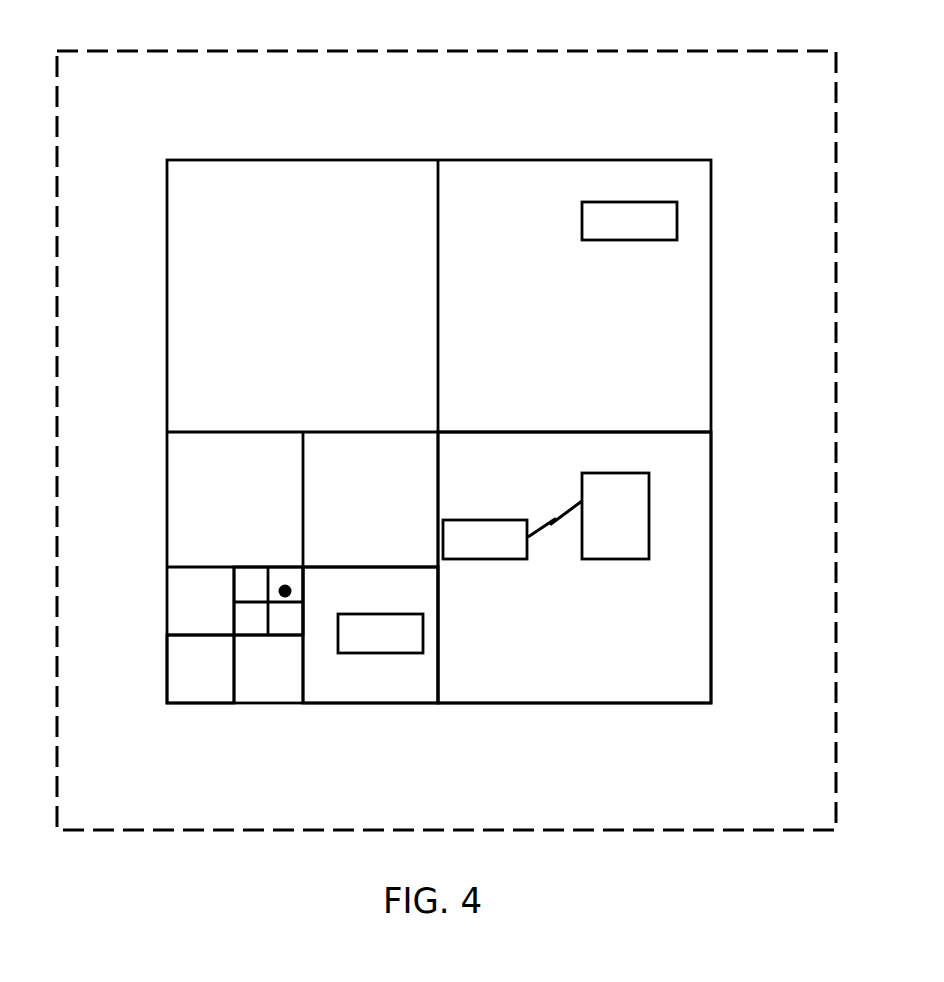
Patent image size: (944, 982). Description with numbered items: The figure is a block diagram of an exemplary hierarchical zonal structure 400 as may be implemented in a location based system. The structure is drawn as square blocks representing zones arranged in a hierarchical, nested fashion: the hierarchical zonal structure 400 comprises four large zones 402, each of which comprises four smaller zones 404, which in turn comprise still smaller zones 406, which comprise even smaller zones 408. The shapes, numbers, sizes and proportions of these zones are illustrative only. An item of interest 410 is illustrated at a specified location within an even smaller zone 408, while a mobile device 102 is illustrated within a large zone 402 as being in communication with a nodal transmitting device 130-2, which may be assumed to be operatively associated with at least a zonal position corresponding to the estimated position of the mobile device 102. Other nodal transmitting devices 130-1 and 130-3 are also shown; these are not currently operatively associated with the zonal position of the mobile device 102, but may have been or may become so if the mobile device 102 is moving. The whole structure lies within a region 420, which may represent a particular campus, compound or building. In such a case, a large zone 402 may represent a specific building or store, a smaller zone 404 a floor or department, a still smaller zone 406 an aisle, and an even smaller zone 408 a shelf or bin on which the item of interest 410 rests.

The region 420 is at (658, 51).
The hierarchical zonal structure 400 is at (729, 226).
The large zone 402 is at (601, 587).
The smaller zone 404 is at (415, 669).
The still smaller zone 406 is at (203, 684).
The even smaller zone 408 is at (278, 576).
The item of interest 410 is at (285, 597).
The nodal transmitting device 130-1 is at (660, 230).
The nodal transmitting device 130-2 is at (515, 550).
The nodal transmitting device 130-3 is at (412, 646).
The mobile device 102 is at (615, 516).